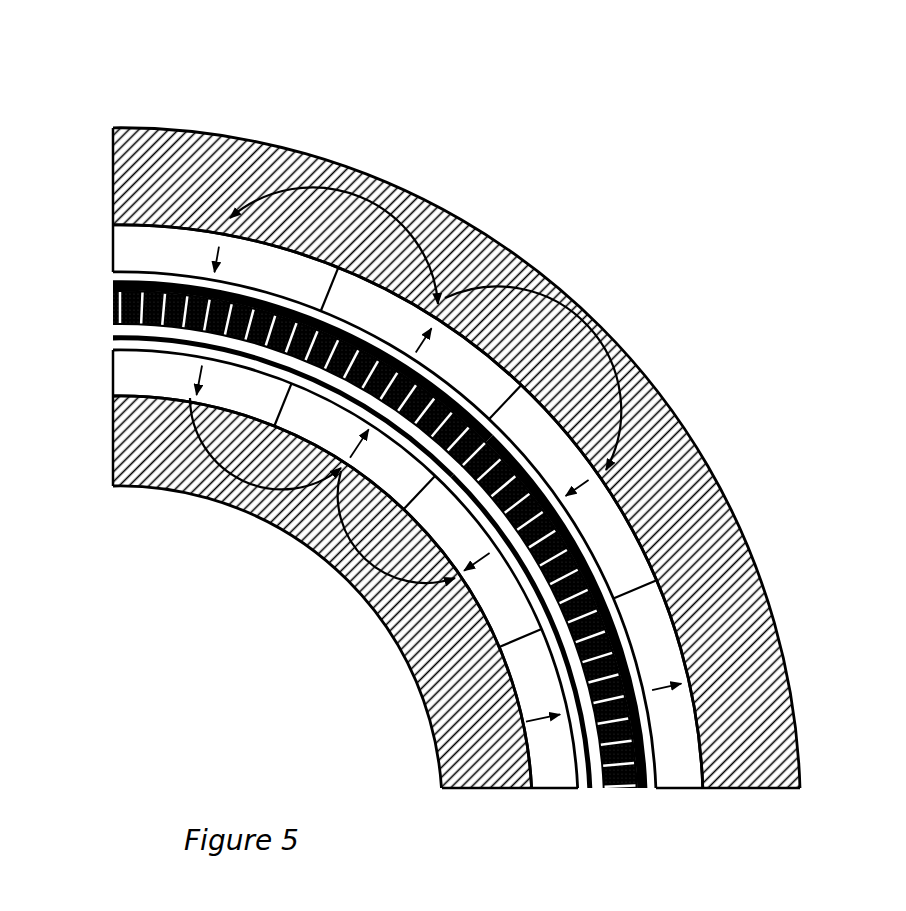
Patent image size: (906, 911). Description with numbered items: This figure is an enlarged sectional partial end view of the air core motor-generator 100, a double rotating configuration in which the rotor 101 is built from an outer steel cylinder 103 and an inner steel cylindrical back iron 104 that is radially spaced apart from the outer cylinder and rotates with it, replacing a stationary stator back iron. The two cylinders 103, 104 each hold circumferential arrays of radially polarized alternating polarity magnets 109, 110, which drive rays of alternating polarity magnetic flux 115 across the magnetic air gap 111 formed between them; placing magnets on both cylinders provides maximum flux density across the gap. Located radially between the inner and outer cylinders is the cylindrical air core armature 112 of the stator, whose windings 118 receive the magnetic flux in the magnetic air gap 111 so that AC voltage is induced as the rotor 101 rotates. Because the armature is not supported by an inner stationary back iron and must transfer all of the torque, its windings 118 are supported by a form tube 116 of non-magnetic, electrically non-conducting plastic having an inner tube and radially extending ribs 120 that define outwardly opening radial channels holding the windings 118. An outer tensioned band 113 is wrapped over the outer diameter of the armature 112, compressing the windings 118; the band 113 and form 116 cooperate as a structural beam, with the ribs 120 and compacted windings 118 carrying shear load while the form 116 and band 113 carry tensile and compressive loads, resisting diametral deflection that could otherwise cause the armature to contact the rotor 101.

The air core motor-generator 100 is at (147, 68).
The rotor 101 is at (92, 162).
The outer steel cylinder 103 is at (750, 782).
The inner steel cylindrical back iron 104 is at (477, 782).
The magnets 109 is at (533, 782).
The magnets 110 is at (672, 782).
The magnetic air gap 111 is at (578, 788).
The air core armature 112 is at (80, 290).
The outer tensioned band 113 is at (107, 272).
The magnetic flux 115 is at (584, 311).
The form tube 116 is at (590, 782).
The windings 118 is at (107, 303).
The radially extending ribs 120 is at (631, 782).